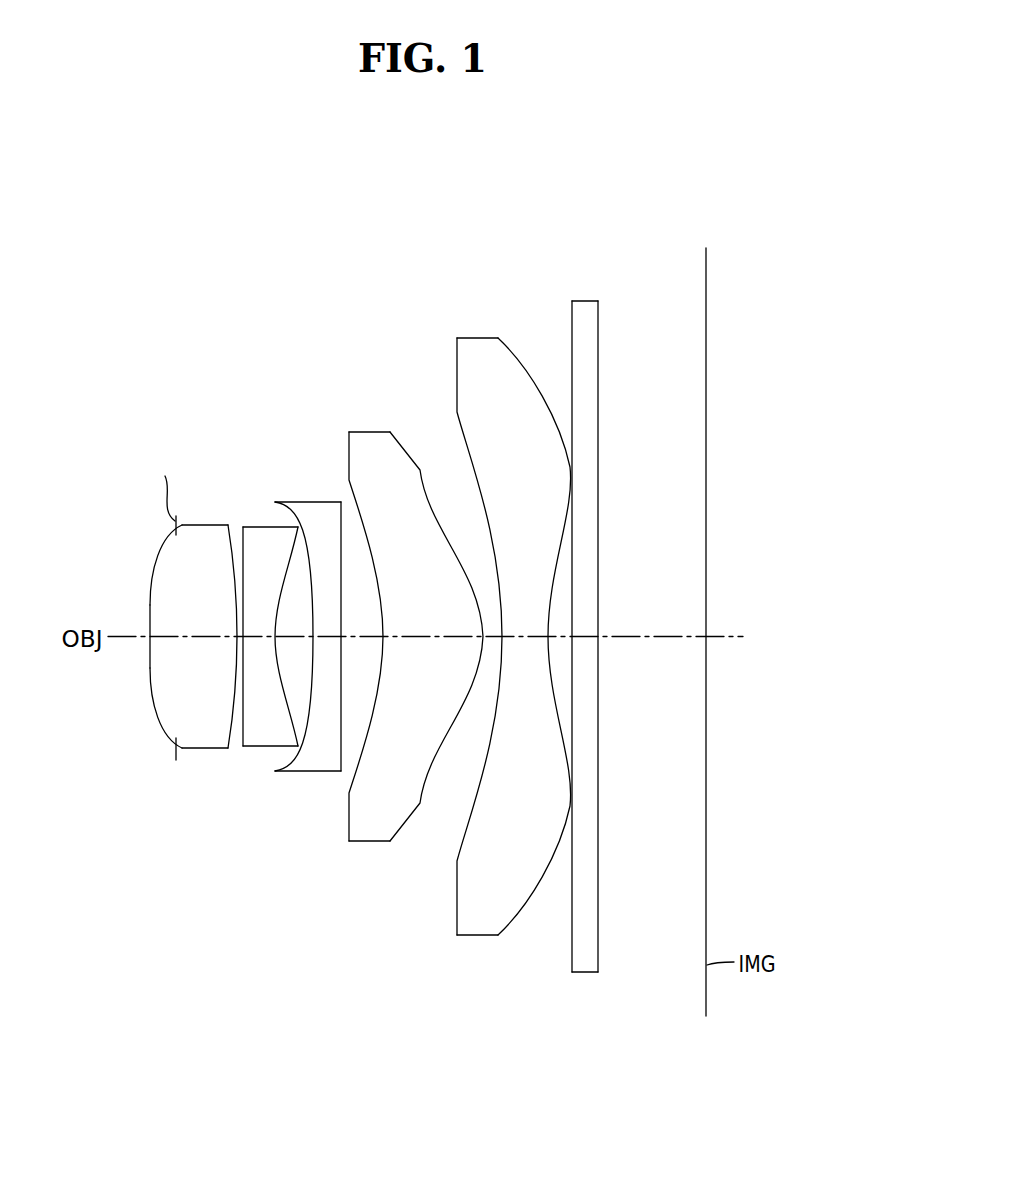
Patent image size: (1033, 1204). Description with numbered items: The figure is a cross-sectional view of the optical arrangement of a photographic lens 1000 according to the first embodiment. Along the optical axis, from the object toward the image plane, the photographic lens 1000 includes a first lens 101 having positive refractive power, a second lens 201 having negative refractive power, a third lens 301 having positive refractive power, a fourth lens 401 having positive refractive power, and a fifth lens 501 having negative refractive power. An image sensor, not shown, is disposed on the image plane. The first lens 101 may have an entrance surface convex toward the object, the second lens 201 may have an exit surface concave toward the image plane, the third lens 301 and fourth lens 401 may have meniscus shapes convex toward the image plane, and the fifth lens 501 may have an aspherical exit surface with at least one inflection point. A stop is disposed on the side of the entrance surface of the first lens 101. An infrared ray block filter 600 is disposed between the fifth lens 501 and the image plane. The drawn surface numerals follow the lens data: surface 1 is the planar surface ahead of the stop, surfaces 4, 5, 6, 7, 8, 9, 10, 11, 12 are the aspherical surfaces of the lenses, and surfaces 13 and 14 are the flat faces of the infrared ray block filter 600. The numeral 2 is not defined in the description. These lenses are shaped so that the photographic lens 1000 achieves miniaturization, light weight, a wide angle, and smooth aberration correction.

The photographic lens 1000 is at (727, 200).
The surface 1 is at (148, 622).
The second surface of first lens 2 is at (160, 563).
The surface 4 is at (228, 562).
The surface 5 is at (243, 550).
The surface 6 is at (283, 558).
The surface 7 is at (303, 517).
The surface 8 is at (342, 533).
The surface 9 is at (355, 492).
The surface 10 is at (420, 468).
The surface 11 is at (465, 447).
The surface 12 is at (521, 360).
The surface 13 is at (572, 343).
The surface 14 is at (598, 343).
The first lens 101 is at (175, 632).
The second lens 201 is at (264, 640).
The third lens 301 is at (308, 641).
The fourth lens 401 is at (416, 638).
The fifth lens 501 is at (514, 635).
The infrared ray block filter 600 is at (585, 634).